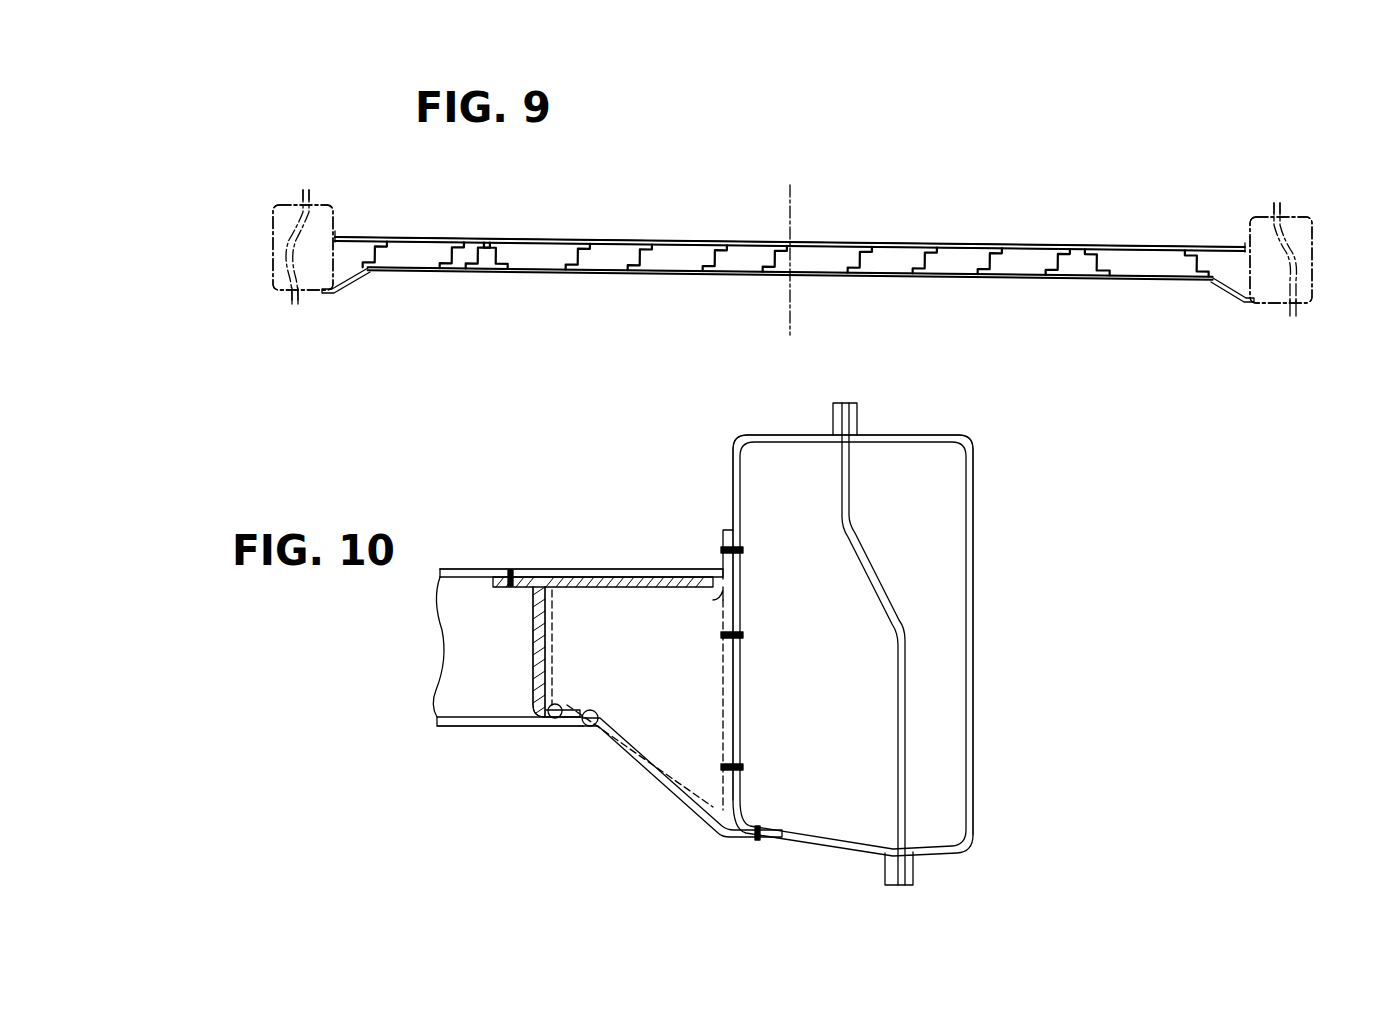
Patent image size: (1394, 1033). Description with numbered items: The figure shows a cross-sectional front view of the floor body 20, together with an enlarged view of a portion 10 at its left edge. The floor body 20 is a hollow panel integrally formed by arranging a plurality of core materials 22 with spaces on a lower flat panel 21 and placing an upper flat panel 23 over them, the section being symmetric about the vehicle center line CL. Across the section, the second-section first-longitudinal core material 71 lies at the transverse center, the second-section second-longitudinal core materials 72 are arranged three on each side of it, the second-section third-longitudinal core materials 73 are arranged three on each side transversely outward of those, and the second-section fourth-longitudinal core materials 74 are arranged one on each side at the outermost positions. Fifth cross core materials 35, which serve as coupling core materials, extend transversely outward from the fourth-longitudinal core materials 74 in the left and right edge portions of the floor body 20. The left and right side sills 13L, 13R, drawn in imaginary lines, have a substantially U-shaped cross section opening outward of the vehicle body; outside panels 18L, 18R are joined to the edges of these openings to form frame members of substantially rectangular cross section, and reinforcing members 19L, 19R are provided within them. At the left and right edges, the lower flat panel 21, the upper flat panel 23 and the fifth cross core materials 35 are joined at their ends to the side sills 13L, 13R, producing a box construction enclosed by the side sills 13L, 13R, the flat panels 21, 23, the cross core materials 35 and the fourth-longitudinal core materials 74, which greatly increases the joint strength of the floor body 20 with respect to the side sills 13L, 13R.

In FIG. 9, the portion 10 is at (703, 182).
In FIG. 10, the portion 10 is at (1062, 747).
In FIG. 9, the center line CL is at (800, 186).
In FIG. 9, the floor body 20 is at (900, 233).
In FIG. 10, the floor body 20 is at (490, 750).
In FIG. 9, the lower flat panel 21 is at (955, 248).
In FIG. 10, the lower flat panel 21 is at (462, 727).
In FIG. 9, the core materials 22 is at (1020, 240).
In FIG. 10, the core materials 22 is at (449, 662).
In FIG. 9, the upper flat panel 23 is at (1050, 245).
In FIG. 10, the upper flat panel 23 is at (465, 568).
In FIG. 9, the second-section first-longitudinal core material 71 is at (766, 276).
In FIG. 9, the second-section second-longitudinal core materials 72 is at (585, 272).
In FIG. 9, the second-section third-longitudinal core materials 73 is at (500, 268).
In FIG. 9, the second-section fourth-longitudinal core materials 74 is at (380, 268).
In FIG. 10, the second-section fourth-longitudinal core materials 74 is at (540, 668).
In FIG. 9, the fifth cross core materials 35 is at (349, 262).
In FIG. 10, the fifth cross core materials 35 is at (680, 735).
In FIG. 9, the right side sill 13R is at (307, 292).
In FIG. 9, the right outside panel 18R is at (273, 242).
In FIG. 9, the right reinforcing member 19R is at (288, 304).
In FIG. 9, the left side sill 13L is at (1266, 312).
In FIG. 10, the left side sill 13L is at (735, 482).
In FIG. 9, the left outside panel 18L is at (1313, 292).
In FIG. 10, the left outside panel 18L is at (975, 546).
In FIG. 9, the left reinforcing member 19L is at (1294, 318).
In FIG. 10, the left reinforcing member 19L is at (900, 636).